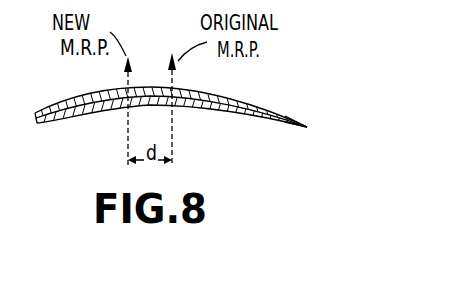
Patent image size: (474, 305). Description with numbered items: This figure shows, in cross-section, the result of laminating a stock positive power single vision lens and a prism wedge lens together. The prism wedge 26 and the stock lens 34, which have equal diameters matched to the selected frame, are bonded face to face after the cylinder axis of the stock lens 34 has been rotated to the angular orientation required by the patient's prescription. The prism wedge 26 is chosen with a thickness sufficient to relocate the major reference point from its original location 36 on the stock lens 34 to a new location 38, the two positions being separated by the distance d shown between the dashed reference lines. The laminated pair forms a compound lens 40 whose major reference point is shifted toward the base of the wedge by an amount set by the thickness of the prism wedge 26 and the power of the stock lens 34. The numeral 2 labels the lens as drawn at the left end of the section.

The blade 2 is at (34, 113).
The prism wedge 26 is at (73, 96).
The stock lens 34 is at (93, 114).
The original M.R.P. location 36 is at (174, 127).
The new M.R.P. location 38 is at (127, 128).
The compound lens 40 is at (310, 88).